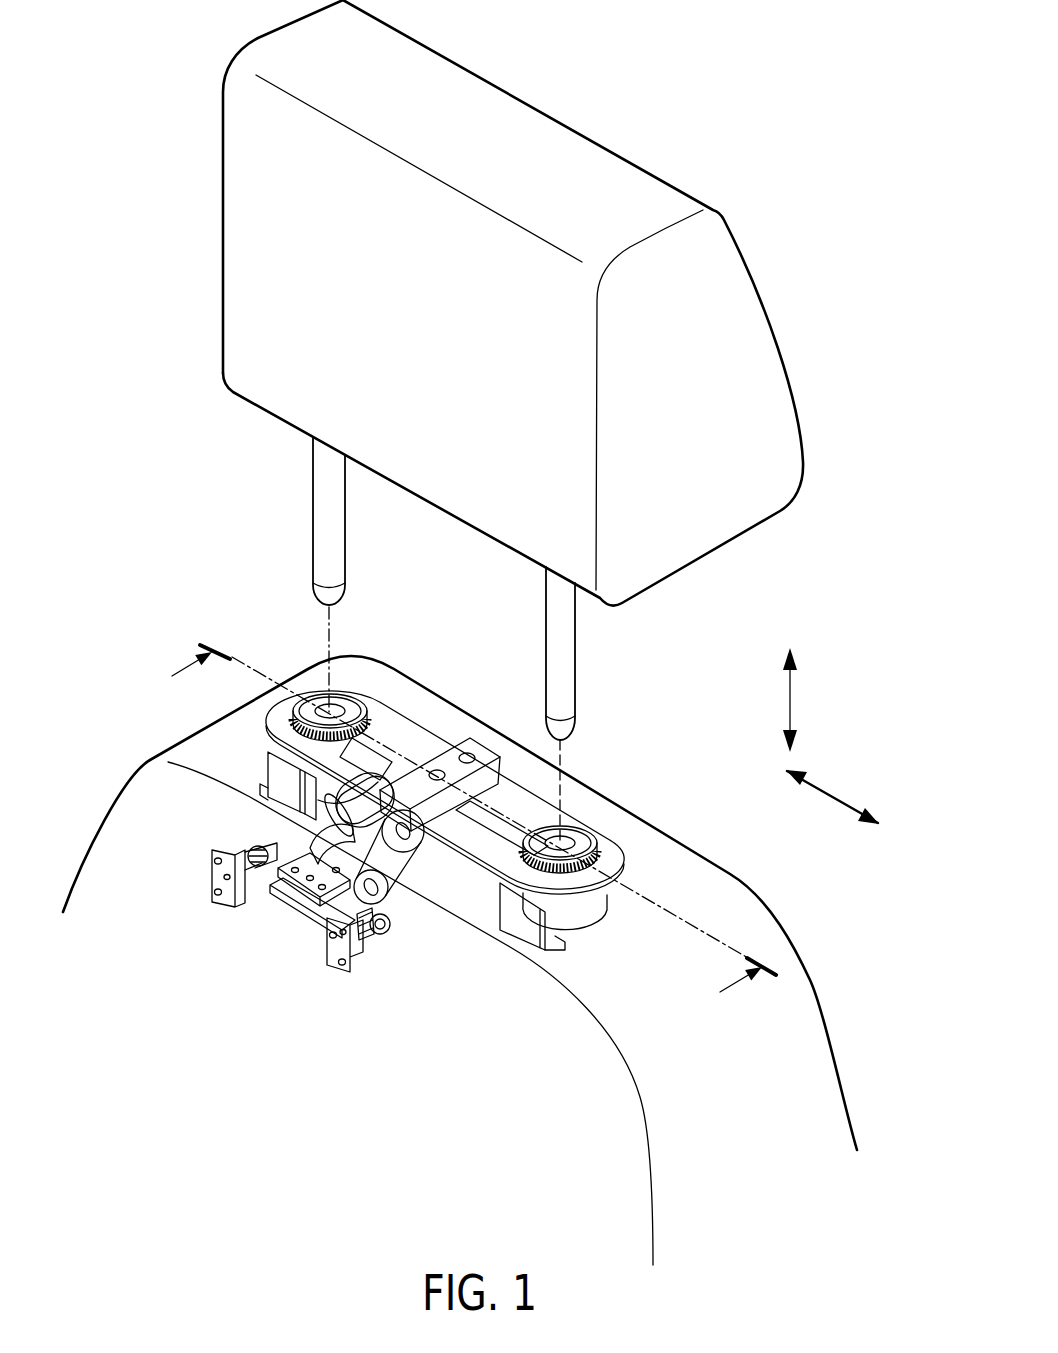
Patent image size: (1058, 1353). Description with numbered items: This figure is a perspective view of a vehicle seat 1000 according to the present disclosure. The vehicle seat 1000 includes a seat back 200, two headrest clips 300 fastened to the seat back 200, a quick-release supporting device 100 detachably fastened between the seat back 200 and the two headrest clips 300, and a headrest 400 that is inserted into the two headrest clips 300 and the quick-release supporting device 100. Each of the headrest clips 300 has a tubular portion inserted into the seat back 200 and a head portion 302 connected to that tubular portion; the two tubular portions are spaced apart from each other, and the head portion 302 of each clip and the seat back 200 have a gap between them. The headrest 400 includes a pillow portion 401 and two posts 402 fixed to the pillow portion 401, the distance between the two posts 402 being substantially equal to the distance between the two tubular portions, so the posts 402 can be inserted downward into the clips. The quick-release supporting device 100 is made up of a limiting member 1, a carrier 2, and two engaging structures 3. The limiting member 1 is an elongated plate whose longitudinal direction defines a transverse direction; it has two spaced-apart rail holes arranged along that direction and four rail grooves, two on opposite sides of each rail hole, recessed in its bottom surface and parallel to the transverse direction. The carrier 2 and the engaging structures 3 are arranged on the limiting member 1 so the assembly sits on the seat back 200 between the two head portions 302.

The vehicle seat 1000 is at (858, 23).
The headrest 400 is at (784, 366).
The pillow portion 401 is at (240, 279).
The posts 402 is at (325, 513).
The seat back 200 is at (796, 937).
The quick-release supporting device 100 is at (404, 718).
The limiting member 1 is at (277, 715).
The carrier 2 is at (481, 752).
The engaging structures 3 is at (316, 697).
The head portion 302 is at (323, 793).
The headrest clips 300 is at (590, 932).